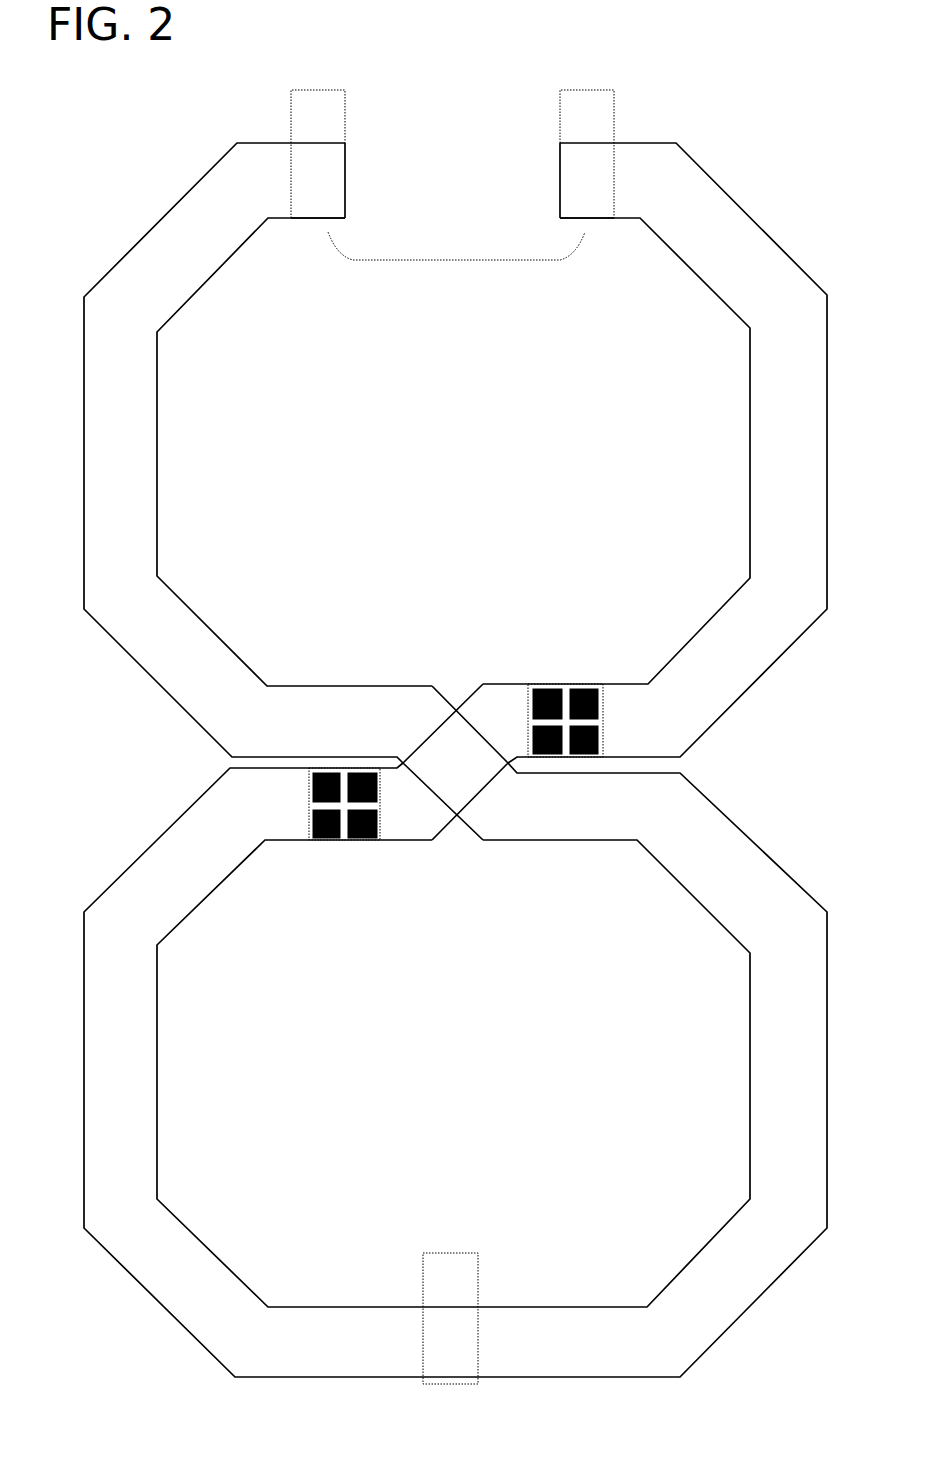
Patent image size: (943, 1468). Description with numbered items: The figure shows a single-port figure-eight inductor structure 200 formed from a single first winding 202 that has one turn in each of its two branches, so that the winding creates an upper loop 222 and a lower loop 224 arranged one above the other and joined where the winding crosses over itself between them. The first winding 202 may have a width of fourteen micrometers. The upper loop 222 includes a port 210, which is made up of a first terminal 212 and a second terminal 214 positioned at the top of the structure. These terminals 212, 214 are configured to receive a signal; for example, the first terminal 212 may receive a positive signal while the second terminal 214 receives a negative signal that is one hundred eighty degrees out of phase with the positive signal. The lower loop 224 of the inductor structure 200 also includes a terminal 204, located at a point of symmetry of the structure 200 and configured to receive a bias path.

The inductor structure 200 is at (433, 76).
The first winding 202 is at (168, 230).
The terminal 204 is at (463, 1253).
The port 210 is at (457, 260).
The first terminal 212 is at (345, 143).
The second terminal 214 is at (560, 143).
The upper loop 222 is at (453, 452).
The lower loop 224 is at (453, 1073).